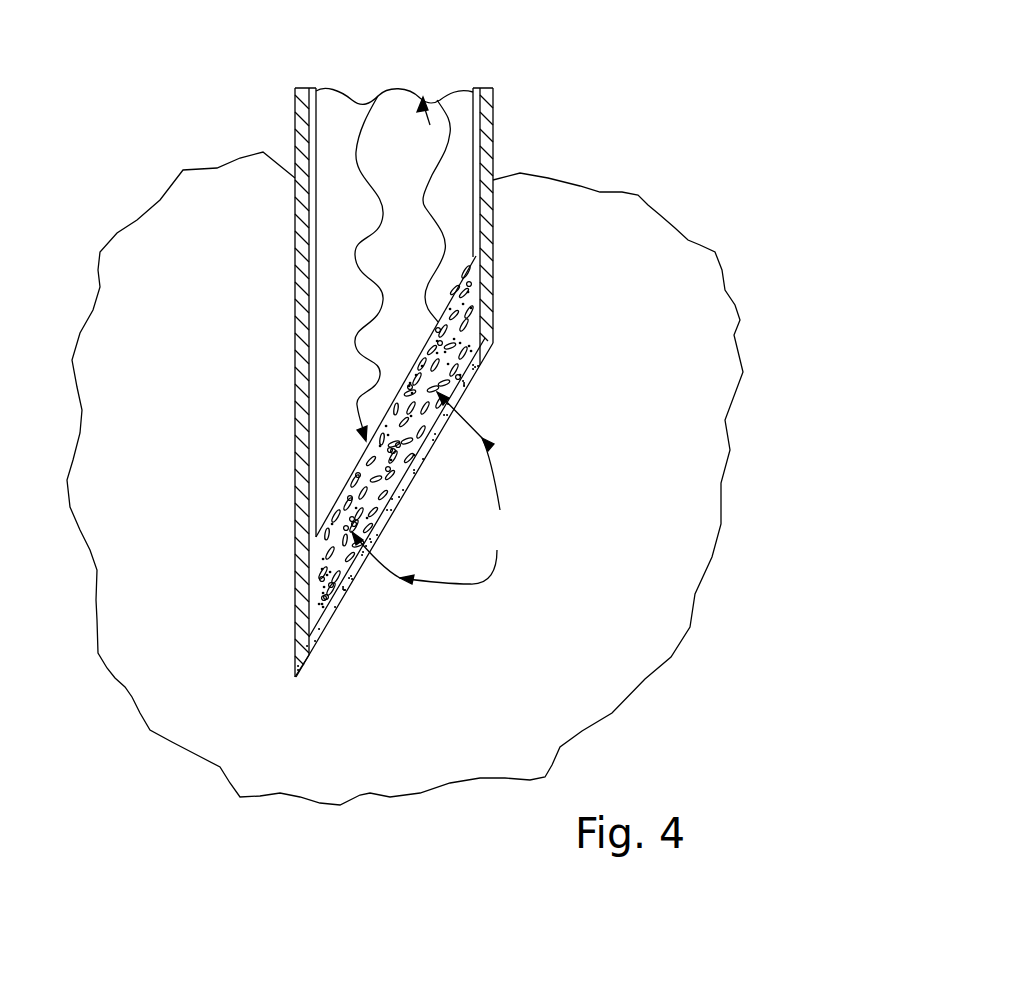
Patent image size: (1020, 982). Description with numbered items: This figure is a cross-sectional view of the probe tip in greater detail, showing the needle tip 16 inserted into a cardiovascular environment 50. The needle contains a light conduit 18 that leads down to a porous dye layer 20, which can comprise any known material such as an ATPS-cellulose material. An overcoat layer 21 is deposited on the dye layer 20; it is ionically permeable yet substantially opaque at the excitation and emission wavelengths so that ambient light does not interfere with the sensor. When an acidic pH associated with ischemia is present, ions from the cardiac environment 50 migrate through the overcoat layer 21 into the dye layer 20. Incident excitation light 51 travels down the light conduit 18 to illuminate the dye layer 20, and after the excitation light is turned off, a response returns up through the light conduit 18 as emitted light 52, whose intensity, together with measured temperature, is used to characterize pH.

The needle tip 16 is at (293, 650).
The light conduit 18 is at (330, 182).
The dye layer 20 is at (477, 317).
The overcoat layer 21 is at (465, 383).
The cardiovascular environment 50 is at (703, 290).
The incident excitation light 51 is at (375, 125).
The emitted light 52 is at (450, 105).